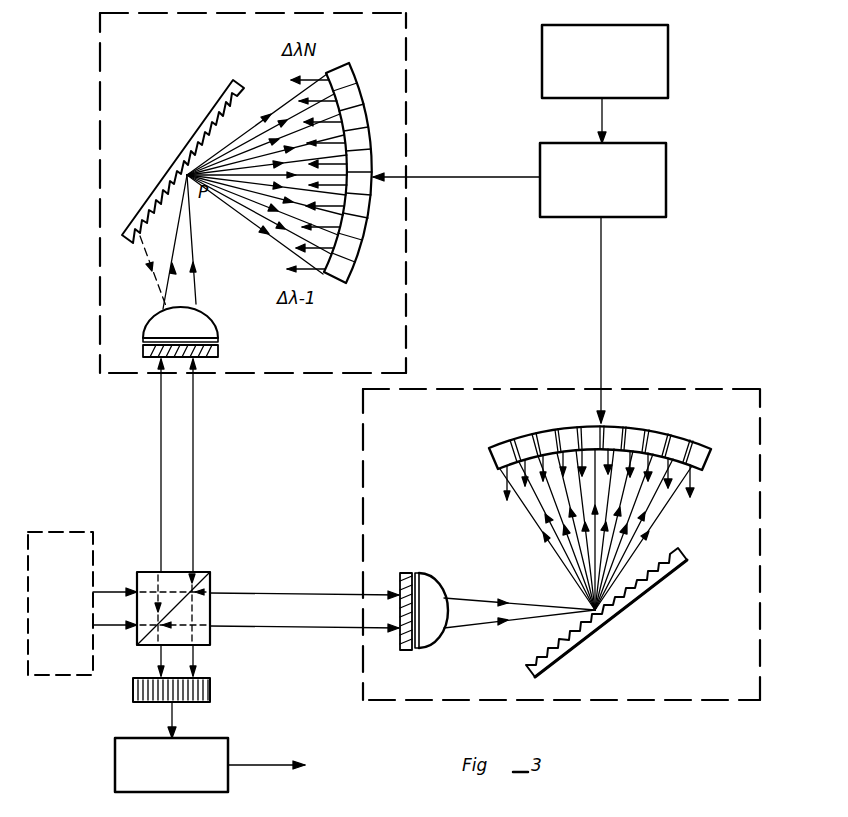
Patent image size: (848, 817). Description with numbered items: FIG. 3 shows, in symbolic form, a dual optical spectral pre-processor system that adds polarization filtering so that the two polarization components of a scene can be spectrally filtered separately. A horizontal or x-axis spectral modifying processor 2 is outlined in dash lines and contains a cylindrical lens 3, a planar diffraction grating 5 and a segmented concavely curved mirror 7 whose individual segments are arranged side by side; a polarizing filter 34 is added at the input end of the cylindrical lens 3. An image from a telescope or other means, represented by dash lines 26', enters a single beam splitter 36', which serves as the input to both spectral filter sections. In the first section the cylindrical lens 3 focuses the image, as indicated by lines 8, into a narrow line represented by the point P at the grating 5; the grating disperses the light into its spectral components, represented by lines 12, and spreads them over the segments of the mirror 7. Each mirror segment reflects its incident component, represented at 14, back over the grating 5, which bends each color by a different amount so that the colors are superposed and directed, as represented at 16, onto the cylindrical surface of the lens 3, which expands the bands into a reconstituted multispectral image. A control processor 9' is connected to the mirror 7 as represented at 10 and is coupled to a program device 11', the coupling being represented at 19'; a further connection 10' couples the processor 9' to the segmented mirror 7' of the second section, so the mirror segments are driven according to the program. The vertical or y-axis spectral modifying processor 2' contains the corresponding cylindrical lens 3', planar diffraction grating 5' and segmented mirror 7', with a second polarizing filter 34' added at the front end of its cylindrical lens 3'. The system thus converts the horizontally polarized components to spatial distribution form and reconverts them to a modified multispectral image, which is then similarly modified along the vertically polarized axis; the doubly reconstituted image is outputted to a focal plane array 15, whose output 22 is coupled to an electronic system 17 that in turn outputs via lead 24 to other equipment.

The horizontal axis spectral modifying processor 2 is at (263, 193).
The planar diffraction grating 5 is at (183, 161).
The segmented concavely curved mirror 7 is at (350, 173).
The dispersed spectral component lines 12 is at (247, 221).
The reflected incident light component 14 is at (296, 263).
The focused image lines 8 is at (197, 296).
The light directed back toward the lens 16 is at (152, 297).
The cylindrical lens 3 is at (171, 324).
The polarizing filter 34 is at (200, 354).
The processor to mirror connection 10 is at (456, 166).
The program device 11' is at (623, 61).
The program to processor link 19' is at (624, 120).
The control processor 9' is at (617, 180).
The processor to mirror connection 10' is at (617, 320).
The vertical axis spectral modifying processor 2' is at (578, 544).
The segmented concavely curved mirror 7' is at (600, 450).
The planar diffraction grating 5' is at (606, 612).
The second polarizing filter 34' is at (397, 595).
The cylindrical lens 3' is at (433, 602).
The telescope or other image source 26' is at (60, 589).
The beam splitter 36' is at (195, 598).
The focal plane array 15 is at (211, 690).
The output 22 is at (173, 716).
The electronic system 17 is at (228, 748).
The lead 24 is at (262, 765).